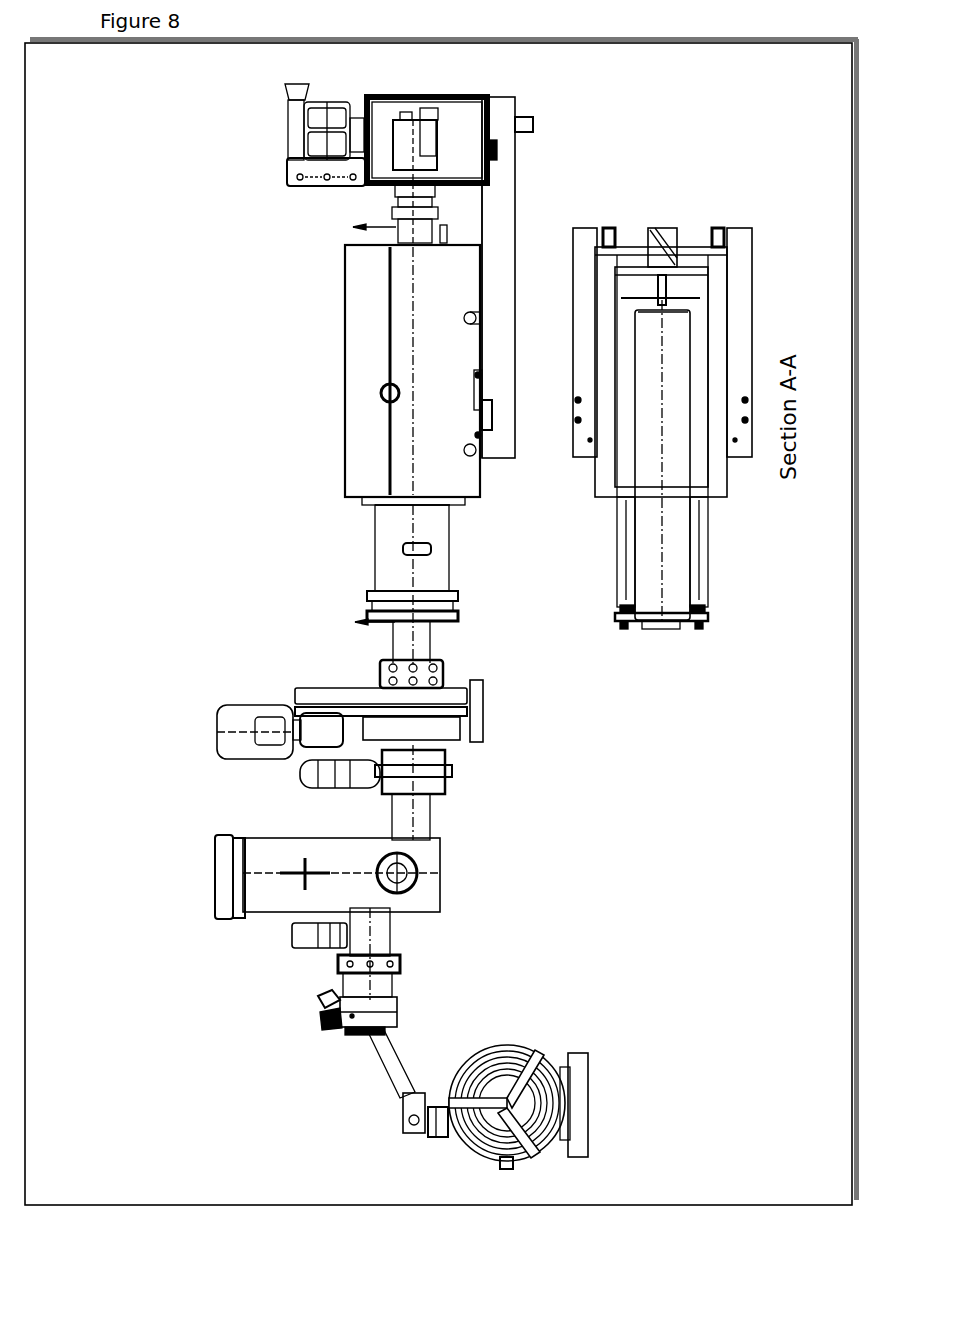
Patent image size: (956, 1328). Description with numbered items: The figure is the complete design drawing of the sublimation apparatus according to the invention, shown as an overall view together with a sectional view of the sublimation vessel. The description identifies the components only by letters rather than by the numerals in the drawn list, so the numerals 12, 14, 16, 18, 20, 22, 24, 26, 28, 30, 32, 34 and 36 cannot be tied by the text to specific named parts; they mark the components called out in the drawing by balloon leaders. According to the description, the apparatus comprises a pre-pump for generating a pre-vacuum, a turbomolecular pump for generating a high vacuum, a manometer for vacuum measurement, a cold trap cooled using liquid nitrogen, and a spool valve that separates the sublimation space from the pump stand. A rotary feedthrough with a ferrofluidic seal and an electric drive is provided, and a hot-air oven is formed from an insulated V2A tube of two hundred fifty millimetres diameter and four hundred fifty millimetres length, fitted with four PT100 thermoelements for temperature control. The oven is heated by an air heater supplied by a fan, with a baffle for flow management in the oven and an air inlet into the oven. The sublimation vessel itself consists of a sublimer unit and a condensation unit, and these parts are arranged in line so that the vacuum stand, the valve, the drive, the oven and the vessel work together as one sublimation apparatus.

The feed hopper unit 12 is at (290, 140).
The head frame 14 is at (395, 200).
The main housing 16 is at (347, 393).
The pipe and flange 18 is at (390, 596).
The drive motor 20 is at (222, 735).
The actuator cylinder 22 is at (300, 772).
The lower housing 24 is at (215, 875).
The side cylinder 26 is at (295, 935).
The valve collar 28 is at (335, 1010).
The arm and wheel 30 is at (467, 1083).
The outer sleeve 32 is at (655, 245).
The inner sleeve 34 is at (622, 290).
The inner cylinder 36 is at (635, 450).